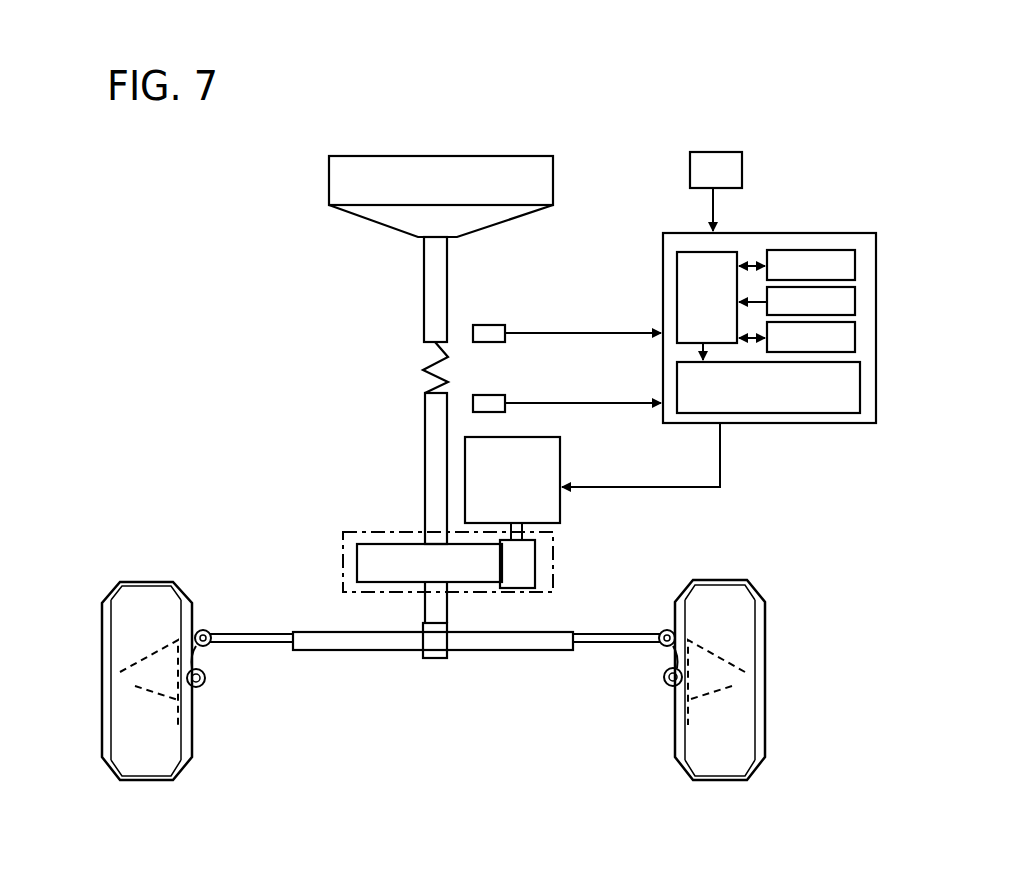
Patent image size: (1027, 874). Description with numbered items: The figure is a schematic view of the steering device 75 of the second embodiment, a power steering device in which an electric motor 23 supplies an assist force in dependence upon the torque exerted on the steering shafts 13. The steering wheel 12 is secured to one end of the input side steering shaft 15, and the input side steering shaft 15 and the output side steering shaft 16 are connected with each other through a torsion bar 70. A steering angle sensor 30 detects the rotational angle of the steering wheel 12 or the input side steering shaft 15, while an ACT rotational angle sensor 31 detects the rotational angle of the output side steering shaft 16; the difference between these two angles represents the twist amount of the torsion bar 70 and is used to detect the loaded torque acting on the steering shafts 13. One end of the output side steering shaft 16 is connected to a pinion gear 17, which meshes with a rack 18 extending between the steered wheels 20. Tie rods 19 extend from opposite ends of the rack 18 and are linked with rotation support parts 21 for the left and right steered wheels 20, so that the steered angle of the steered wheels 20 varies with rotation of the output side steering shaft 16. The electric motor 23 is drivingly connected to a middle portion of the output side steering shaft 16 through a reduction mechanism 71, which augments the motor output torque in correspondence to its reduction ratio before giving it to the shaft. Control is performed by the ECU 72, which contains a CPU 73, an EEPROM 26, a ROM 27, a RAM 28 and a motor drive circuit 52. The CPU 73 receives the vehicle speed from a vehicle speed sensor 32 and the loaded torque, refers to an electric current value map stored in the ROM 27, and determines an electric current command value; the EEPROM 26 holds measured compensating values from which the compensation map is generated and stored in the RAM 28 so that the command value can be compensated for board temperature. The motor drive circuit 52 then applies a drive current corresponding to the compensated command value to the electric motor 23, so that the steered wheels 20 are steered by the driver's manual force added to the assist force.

The steering wheel 12 is at (329, 175).
The steering shafts 13 is at (414, 430).
The input side steering shaft 15 is at (436, 330).
The output side steering shaft 16 is at (437, 418).
The pinion gear 17 is at (437, 660).
The rack 18 is at (350, 652).
The tie rods 19 is at (250, 648).
The steered wheels 20 is at (105, 635).
The rotation support parts 21 is at (205, 630).
The electric motor 23 is at (560, 462).
The EEPROM 26 is at (855, 266).
The ROM 27 is at (855, 302).
The RAM 28 is at (855, 338).
The steering angle sensor 30 is at (497, 325).
The ACT rotational angle sensor 31 is at (490, 412).
The vehicle speed sensor 32 is at (742, 165).
The motor drive circuit 52 is at (860, 395).
The torsion bar 70 is at (444, 368).
The reduction mechanism 71 is at (343, 535).
The ECU 72 is at (747, 332).
The CPU 73 is at (693, 252).
The steering device 75 is at (564, 90).